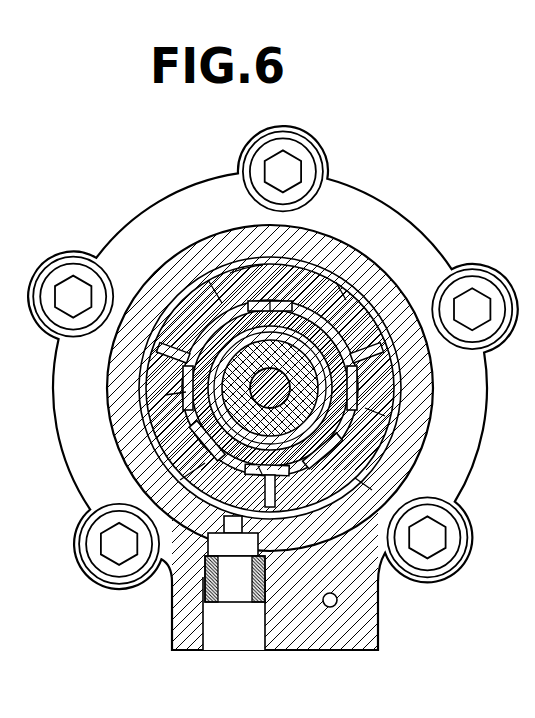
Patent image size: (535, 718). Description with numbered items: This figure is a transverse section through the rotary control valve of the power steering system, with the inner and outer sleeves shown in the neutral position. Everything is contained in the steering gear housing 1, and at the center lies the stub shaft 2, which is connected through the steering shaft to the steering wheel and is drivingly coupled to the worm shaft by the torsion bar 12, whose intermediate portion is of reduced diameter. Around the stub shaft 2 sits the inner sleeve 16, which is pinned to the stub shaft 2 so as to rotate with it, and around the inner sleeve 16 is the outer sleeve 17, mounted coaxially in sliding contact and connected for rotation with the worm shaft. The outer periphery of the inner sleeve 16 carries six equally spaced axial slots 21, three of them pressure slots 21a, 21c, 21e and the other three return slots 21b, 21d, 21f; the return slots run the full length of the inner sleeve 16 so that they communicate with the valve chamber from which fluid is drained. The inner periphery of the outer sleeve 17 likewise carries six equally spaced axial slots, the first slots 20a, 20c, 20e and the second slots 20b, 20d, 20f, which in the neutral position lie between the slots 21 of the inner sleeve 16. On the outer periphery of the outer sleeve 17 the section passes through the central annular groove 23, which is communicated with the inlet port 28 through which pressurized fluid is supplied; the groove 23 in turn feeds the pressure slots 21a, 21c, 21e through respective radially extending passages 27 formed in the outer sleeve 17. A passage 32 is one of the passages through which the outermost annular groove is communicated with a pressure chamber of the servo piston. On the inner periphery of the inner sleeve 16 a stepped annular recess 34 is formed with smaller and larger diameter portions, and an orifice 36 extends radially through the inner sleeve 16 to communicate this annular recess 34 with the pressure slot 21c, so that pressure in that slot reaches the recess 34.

The steering gear housing 1 is at (347, 188).
The stub shaft 2 is at (317, 500).
The torsion bar 12 is at (292, 394).
The inner sleeve 16 is at (190, 290).
The outer sleeve 17 is at (245, 275).
The first slot 20a is at (336, 282).
The second slot 20b is at (365, 408).
The first slot 20c is at (355, 478).
The second slot 20d is at (205, 463).
The first slot 20e is at (186, 392).
The second slot 20f is at (222, 303).
The cam ring 21 is at (270, 388).
The pressure slot 21a is at (360, 390).
The return slot 21b is at (378, 448).
The pressure slot 21c is at (293, 507).
The return slot 21d is at (205, 440).
The pressure slot 21e is at (180, 368).
The return slot 21f is at (272, 305).
The annular groove 23 is at (368, 310).
The radially extending passage 27 is at (160, 340).
The inlet port 28 is at (242, 637).
The passage 32 is at (338, 601).
The stepped annular recess 34 is at (170, 297).
The orifice 36 is at (258, 466).